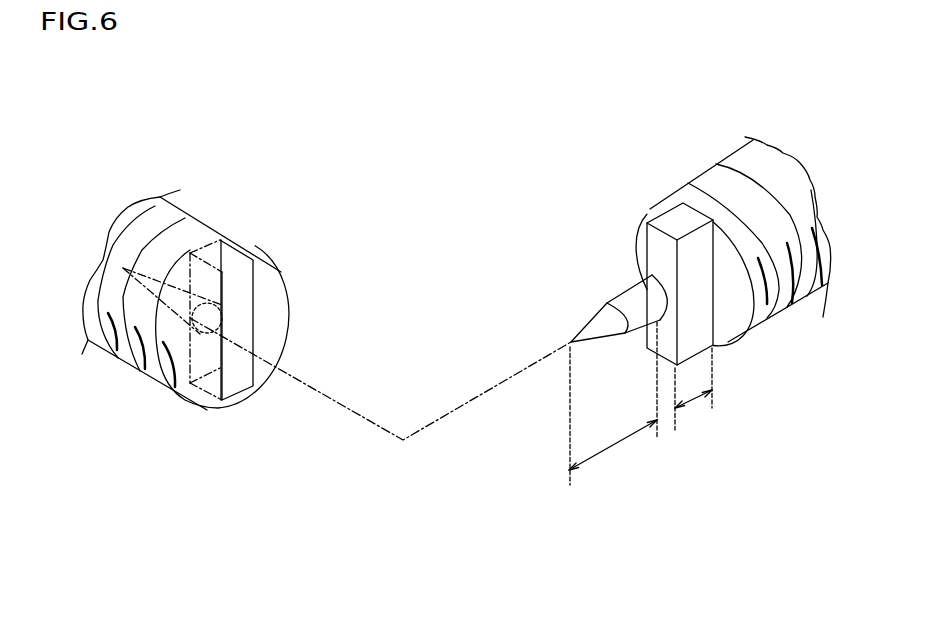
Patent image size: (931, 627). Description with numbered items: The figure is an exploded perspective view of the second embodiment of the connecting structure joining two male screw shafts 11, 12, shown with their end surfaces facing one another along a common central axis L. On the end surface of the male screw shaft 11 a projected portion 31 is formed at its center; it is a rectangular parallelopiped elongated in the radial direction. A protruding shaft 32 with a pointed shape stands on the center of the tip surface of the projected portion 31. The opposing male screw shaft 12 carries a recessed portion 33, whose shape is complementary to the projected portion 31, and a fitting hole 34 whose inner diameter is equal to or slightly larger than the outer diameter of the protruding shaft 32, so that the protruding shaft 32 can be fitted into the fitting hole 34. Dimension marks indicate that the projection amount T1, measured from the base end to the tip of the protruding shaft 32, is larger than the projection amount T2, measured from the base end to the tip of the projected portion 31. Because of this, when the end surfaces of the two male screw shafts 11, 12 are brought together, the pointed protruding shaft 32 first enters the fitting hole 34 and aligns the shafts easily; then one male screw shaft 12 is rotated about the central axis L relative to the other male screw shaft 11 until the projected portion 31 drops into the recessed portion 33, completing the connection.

The male screw shaft 11 is at (738, 160).
The male screw shaft 12 is at (186, 212).
The projected portion 31 is at (662, 212).
The protruding shaft 32 is at (630, 289).
The recessed portion 33 is at (237, 248).
The fitting hole 34 is at (210, 317).
The central axis L is at (335, 395).
The projection amount of protruding shaft T1 is at (617, 441).
The projection amount of projected portion T2 is at (688, 403).